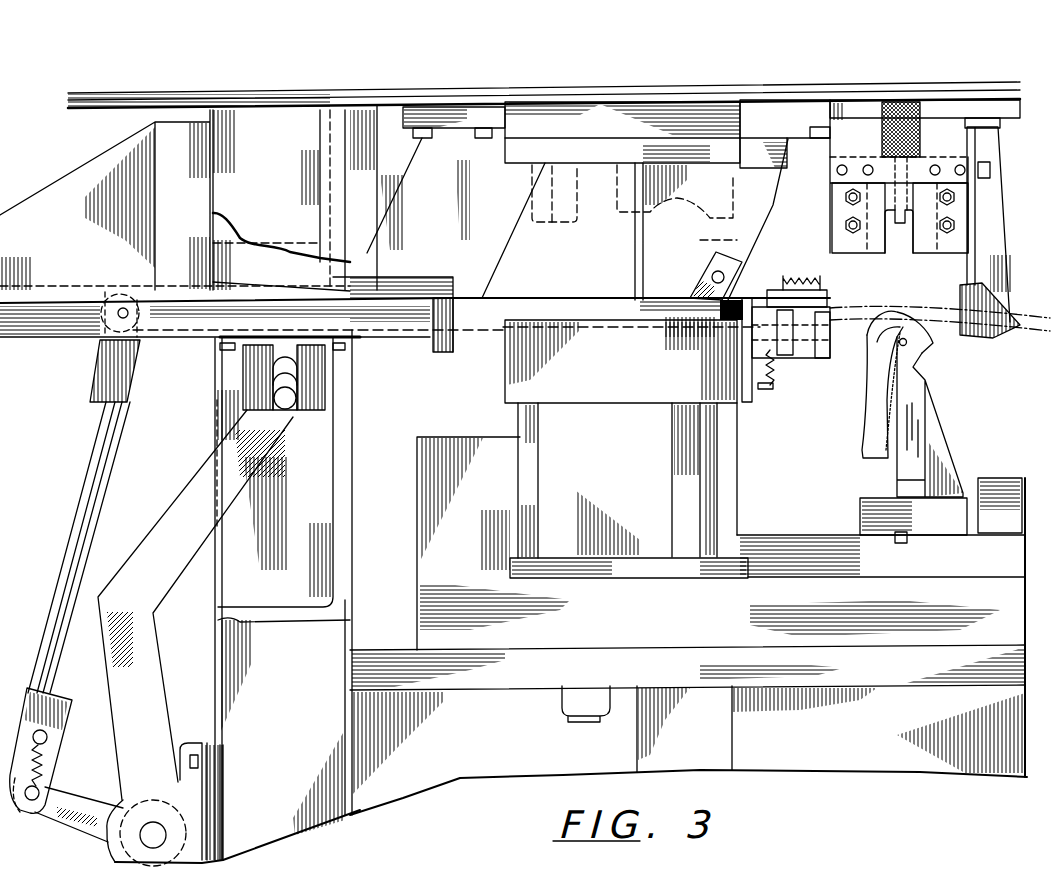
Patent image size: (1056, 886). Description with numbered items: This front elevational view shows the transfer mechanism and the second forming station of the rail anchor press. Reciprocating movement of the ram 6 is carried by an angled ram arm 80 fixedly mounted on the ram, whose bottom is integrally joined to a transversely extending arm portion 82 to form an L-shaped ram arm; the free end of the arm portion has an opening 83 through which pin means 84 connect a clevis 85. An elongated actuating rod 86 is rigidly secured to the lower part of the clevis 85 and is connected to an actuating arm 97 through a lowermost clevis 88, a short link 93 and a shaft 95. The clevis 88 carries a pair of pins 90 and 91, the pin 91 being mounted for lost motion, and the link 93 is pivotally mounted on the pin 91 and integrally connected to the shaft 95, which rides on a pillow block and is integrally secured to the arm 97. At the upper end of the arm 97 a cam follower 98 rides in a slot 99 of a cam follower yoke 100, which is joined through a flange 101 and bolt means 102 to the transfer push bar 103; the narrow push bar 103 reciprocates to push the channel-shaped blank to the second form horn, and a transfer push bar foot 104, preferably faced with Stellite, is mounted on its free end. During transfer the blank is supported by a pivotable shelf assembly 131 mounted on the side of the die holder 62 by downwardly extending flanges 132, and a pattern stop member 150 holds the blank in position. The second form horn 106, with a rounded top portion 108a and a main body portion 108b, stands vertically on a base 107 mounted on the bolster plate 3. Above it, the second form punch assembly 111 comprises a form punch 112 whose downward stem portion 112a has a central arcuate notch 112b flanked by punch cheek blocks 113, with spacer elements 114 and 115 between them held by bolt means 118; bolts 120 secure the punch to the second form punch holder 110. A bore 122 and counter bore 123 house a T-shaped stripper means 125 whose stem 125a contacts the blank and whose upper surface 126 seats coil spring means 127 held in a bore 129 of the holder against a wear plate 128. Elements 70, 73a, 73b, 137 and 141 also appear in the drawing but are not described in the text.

The ram 6 is at (776, 90).
The mounting block 70 is at (737, 119).
The angled ram arm 80 is at (436, 180).
The arm portion 82 is at (473, 290).
The guide member 73a is at (697, 205).
The guide member 73b is at (552, 222).
The opening 83 is at (112, 295).
The pin means 84 is at (100, 323).
The clevis 85 is at (92, 385).
The elongated actuating rod 86 is at (70, 548).
The clevis 88 is at (70, 724).
The pin 90 is at (47, 740).
The pin 91 is at (32, 800).
The link 93 is at (83, 800).
The shaft 95 is at (153, 823).
The actuating arm 97 is at (143, 560).
The cam follower 98 is at (290, 410).
The slot 99 is at (300, 358).
The cam follower yoke 100 is at (243, 357).
The flange 101 is at (350, 322).
The bolt means 102 is at (350, 370).
The transfer push bar 103 is at (482, 300).
The die holder 62 is at (512, 385).
The bolster plate 3 is at (418, 612).
The transfer push bar foot 104 is at (740, 333).
The downwardly extending flanges 132 is at (750, 352).
The coupling 137 is at (762, 300).
The bolt with spring 141 is at (765, 388).
The pivotable shelf assembly 131 is at (836, 317).
The second form horn 106 is at (913, 397).
The base 107 is at (948, 510).
The rounded top portion 108a is at (915, 350).
The main body portion 108b is at (903, 450).
The second form punch holder 110 is at (985, 113).
The second form punch assembly 111 is at (828, 222).
The form punch 112 is at (960, 186).
The stem portion 112a is at (858, 231).
The arcuate notch 112b is at (940, 231).
The punch cheek blocks 113 is at (832, 248).
The spacer element 114 is at (845, 205).
The spacer element 115 is at (965, 205).
The bolt means 118 is at (850, 195).
The bolts 120 is at (838, 170).
The bore 122 is at (895, 175).
The counter bore 123 is at (883, 165).
The stripper means 125 is at (920, 163).
The stem 125a is at (897, 245).
The upper surface 126 is at (882, 145).
The coil spring means 127 is at (878, 103).
The wear plate 128 is at (910, 102).
The bore 129 is at (920, 120).
The pattern stop member 150 is at (1000, 330).